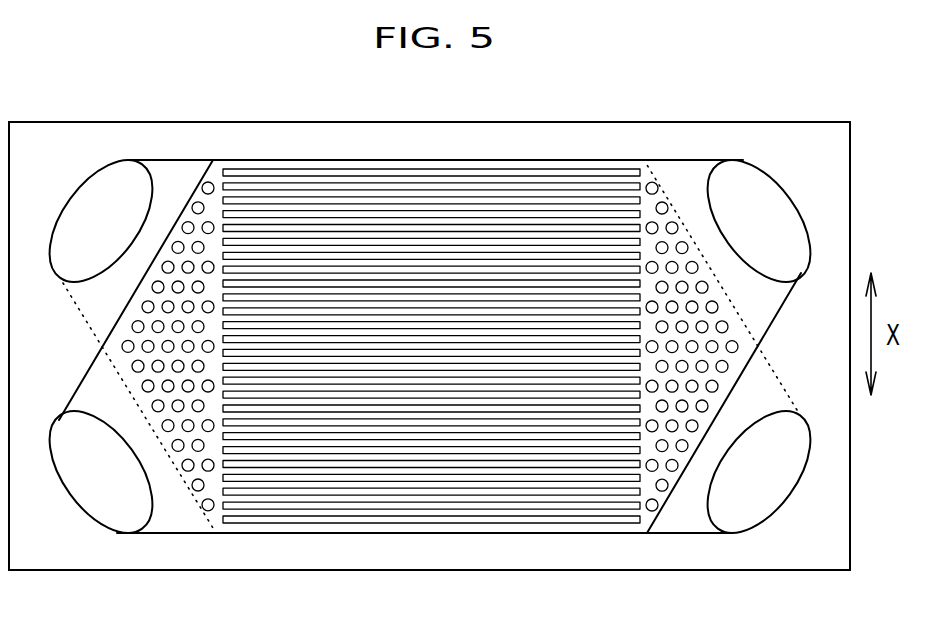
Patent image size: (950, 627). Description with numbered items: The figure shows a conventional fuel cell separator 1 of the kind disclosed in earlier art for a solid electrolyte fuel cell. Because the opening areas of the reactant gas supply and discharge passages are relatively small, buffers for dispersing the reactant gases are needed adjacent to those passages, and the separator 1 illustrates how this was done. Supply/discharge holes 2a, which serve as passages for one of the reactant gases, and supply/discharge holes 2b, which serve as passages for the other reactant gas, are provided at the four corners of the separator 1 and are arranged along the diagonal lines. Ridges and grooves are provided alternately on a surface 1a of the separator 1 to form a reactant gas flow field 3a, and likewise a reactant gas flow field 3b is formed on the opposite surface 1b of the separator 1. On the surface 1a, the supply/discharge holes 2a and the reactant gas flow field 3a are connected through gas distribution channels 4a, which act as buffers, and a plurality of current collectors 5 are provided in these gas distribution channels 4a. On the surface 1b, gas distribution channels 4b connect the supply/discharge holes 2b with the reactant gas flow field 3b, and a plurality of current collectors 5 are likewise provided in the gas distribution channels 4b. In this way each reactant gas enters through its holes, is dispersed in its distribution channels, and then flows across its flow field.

The separator 1 is at (590, 119).
The surface 1a is at (836, 527).
The surface 1b is at (836, 495).
The supply/discharge holes 2a is at (430, 346).
The supply/discharge holes 2b is at (430, 346).
The reactant gas flow field 3a is at (380, 418).
The reactant gas flow field 3b is at (480, 418).
The gas distribution channels 4a is at (100, 403).
The gas distribution channels 4b is at (100, 290).
The current collectors 5 is at (177, 241).